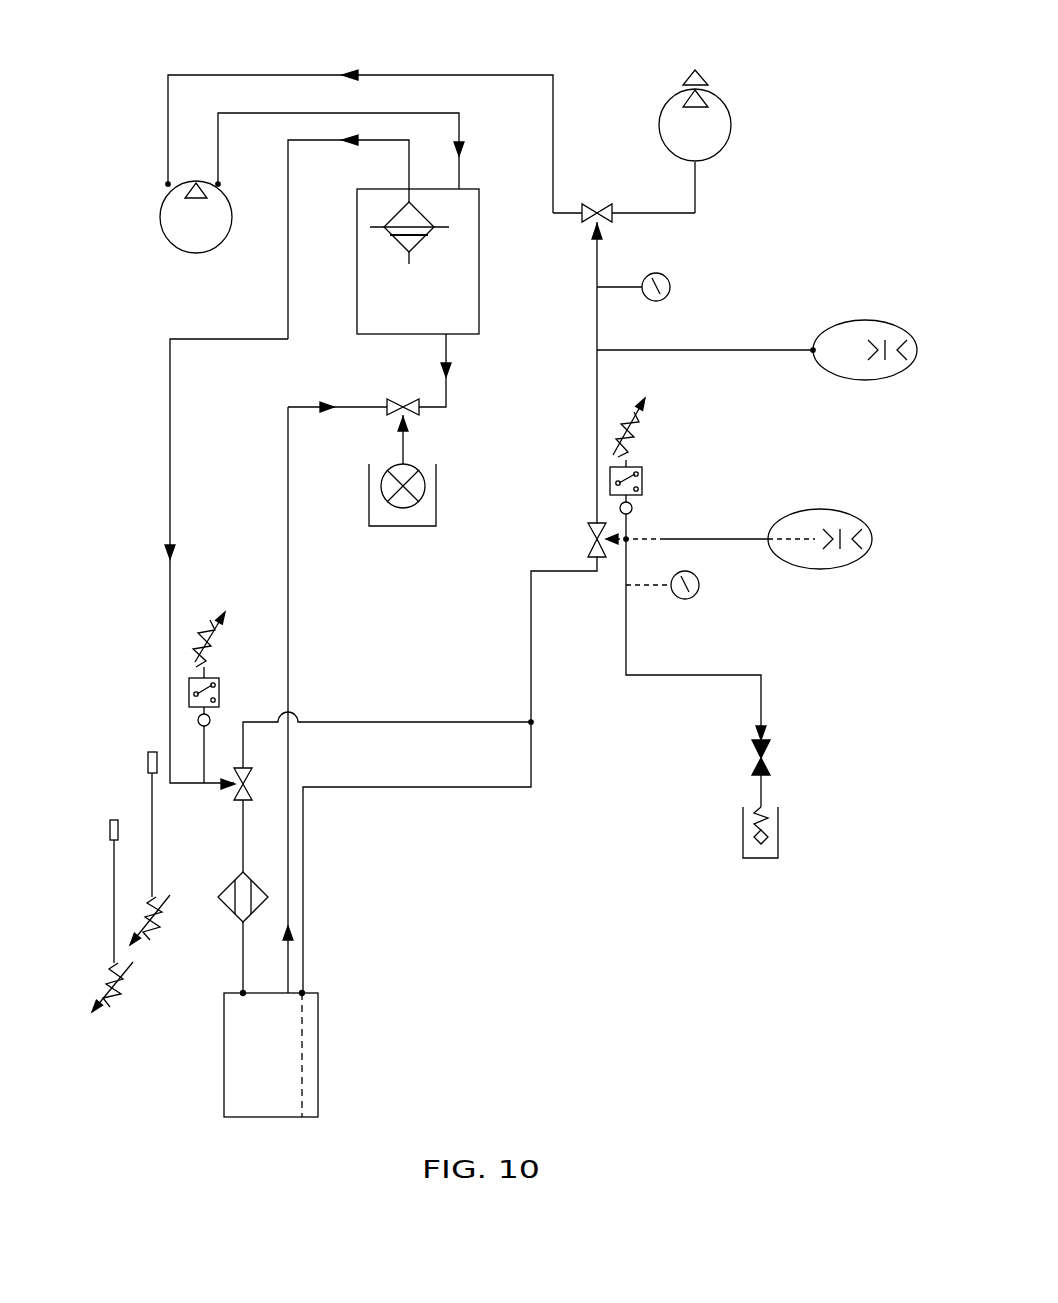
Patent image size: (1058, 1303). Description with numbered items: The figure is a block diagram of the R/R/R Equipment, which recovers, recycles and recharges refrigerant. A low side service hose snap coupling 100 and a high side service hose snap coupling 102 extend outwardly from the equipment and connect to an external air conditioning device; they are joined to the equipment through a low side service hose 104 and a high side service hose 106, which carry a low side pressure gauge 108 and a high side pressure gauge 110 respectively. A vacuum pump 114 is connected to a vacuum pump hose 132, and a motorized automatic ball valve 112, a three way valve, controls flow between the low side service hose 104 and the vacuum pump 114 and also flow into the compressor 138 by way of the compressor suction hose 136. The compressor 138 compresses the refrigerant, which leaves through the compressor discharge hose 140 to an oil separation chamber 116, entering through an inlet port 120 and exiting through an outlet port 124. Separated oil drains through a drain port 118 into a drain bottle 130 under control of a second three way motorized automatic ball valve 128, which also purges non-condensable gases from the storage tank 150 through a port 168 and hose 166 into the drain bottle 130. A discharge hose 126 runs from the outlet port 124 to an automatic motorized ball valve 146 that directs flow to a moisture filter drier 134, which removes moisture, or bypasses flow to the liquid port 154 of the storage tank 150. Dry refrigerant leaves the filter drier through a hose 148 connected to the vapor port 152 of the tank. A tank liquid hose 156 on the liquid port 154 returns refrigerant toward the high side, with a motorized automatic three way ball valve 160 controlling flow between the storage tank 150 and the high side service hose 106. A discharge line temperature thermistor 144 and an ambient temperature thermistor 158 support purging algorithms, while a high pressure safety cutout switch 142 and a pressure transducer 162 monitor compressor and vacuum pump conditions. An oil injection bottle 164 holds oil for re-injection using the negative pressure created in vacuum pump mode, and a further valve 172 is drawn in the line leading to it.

The low side service hose snap coupling 100 is at (862, 320).
The high side service hose snap coupling 102 is at (816, 510).
The low side service hose 104 is at (770, 348).
The high side service hose 106 is at (704, 537).
The low side pressure gauge 108 is at (672, 288).
The high side pressure gauge 110 is at (700, 588).
The motorized automatic ball valve 112 is at (598, 206).
The vacuum pump 114 is at (731, 128).
The oil separation chamber 116 is at (406, 338).
The drain port 118 is at (449, 338).
The inlet port 120 is at (462, 190).
The outlet port 124 is at (400, 198).
The discharge hose 126 is at (244, 338).
The motorized automatic ball valve 128 is at (402, 400).
The drain bottle 130 is at (403, 528).
The vacuum pump hose 132 is at (697, 190).
The moisture filter drier 134 is at (230, 884).
The compressor suction hose 136 is at (256, 74).
The compressor 138 is at (172, 232).
The compressor discharge hose 140 is at (255, 116).
The high pressure safety cutout switch 142 is at (222, 682).
The discharge line temperature thermistor 144 is at (160, 910).
The automatic motorized ball valve 146 is at (236, 796).
The hose 148 is at (242, 948).
The storage tank 150 is at (225, 1080).
The vapor port 152 is at (241, 992).
The liquid port 154 is at (306, 992).
The tank liquid hose 156 is at (306, 886).
The ambient temperature thermistor 158 is at (122, 1004).
The motorized automatic three way ball valve 160 is at (586, 536).
The pressure transducer 162 is at (640, 426).
The oil injection bottle 164 is at (742, 850).
The hose 166 is at (290, 614).
The port 168 is at (289, 1000).
The valve 172 is at (772, 762).